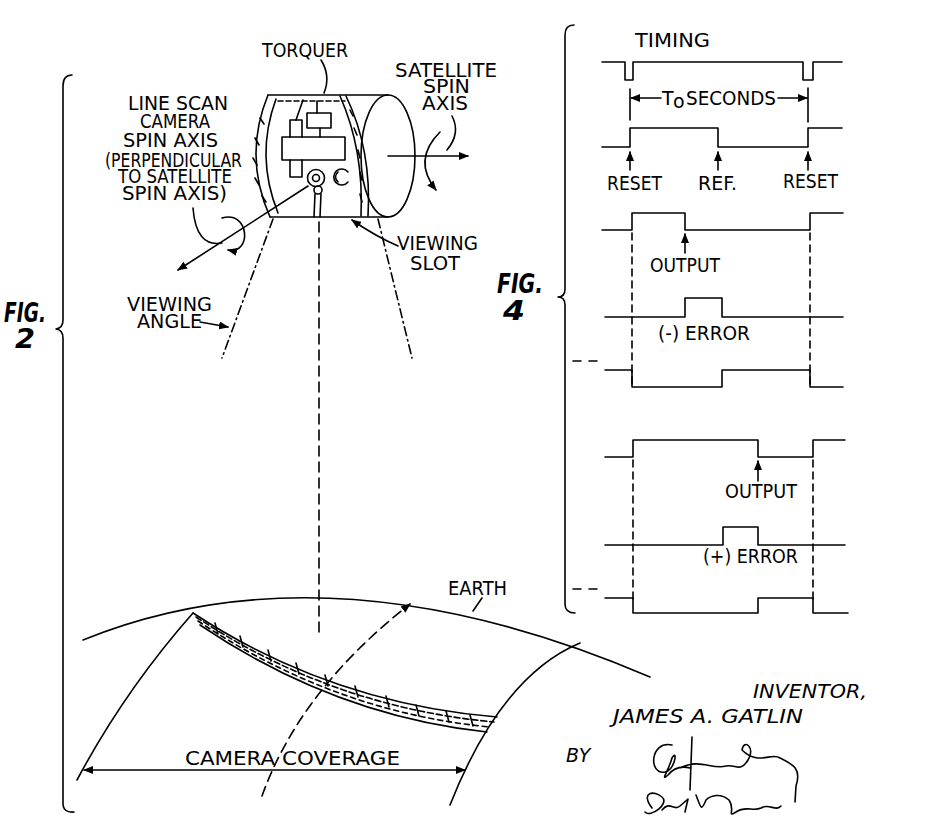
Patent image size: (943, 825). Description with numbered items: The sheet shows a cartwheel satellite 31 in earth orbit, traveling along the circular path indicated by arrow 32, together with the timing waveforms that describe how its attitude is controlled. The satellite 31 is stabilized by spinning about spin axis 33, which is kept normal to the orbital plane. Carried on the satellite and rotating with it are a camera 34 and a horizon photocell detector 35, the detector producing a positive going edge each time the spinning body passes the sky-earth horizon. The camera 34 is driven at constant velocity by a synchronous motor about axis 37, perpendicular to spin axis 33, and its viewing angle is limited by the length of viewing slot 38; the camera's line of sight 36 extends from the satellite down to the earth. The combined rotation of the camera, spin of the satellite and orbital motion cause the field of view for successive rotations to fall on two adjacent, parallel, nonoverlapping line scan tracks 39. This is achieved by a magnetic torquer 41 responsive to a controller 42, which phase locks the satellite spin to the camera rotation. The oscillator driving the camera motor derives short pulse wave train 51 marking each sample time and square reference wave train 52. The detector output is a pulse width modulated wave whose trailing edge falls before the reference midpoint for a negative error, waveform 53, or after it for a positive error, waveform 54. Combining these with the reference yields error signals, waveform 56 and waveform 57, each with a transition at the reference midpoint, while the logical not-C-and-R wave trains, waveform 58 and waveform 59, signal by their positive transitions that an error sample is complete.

In FIG. 2, the cartwheel satellite 31 is at (353, 94).
In FIG. 2, the arrow indicating orbital direction 32 is at (378, 627).
In FIG. 2, the satellite spin axis 33 is at (413, 181).
In FIG. 2, the camera 34 is at (309, 212).
In FIG. 2, the horizon photocell detector 35 is at (350, 177).
In FIG. 2, the camera line of sight 36 is at (323, 441).
In FIG. 2, the camera rotation axis 37 is at (243, 237).
In FIG. 2, the viewing slot 38 is at (321, 219).
In FIG. 2, the line scan tracks 39 is at (421, 707).
In FIG. 2, the magnetic torquer 41 is at (312, 94).
In FIG. 2, the controller 42 is at (263, 108).
In FIG. 4, the wave train 51 is at (832, 62).
In FIG. 4, the reference wave train 52 is at (836, 128).
In FIG. 4, the negative error waveform 53 is at (836, 213).
In FIG. 4, the positive error waveform 54 is at (838, 440).
In FIG. 4, the negative error signal waveform 56 is at (838, 317).
In FIG. 4, the positive error signal waveform 57 is at (840, 545).
In FIG. 4, the error cycle completion waveform for negative error 58 is at (812, 376).
In FIG. 4, the error cycle completion waveform for positive error 59 is at (800, 598).